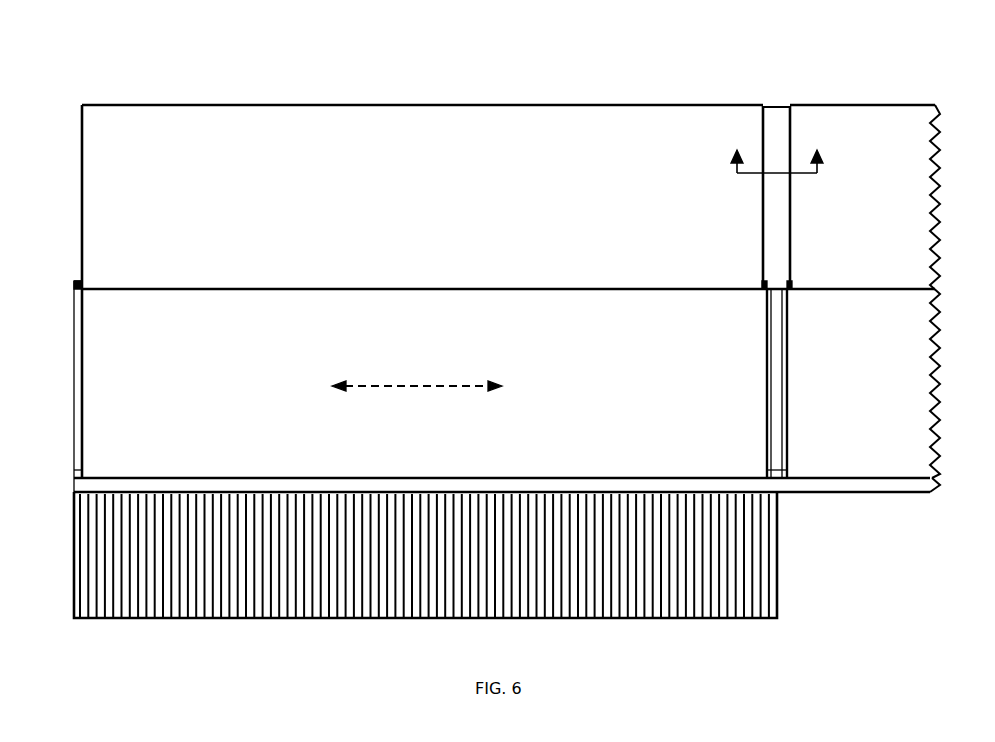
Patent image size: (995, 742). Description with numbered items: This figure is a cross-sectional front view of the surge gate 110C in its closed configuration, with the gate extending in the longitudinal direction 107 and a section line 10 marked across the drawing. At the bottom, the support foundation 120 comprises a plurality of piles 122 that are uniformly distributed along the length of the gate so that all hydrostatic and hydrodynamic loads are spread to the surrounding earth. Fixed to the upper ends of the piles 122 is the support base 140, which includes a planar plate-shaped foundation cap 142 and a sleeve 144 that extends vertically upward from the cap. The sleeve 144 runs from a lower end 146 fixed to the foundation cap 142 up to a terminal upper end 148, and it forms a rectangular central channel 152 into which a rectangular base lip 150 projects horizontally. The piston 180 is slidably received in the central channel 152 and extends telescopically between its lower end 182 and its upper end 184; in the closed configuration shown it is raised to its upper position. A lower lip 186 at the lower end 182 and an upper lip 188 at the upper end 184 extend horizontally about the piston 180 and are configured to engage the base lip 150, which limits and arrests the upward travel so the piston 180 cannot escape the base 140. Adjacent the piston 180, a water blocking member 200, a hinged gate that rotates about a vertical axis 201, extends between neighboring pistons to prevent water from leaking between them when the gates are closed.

The surge gate 110C is at (122, 92).
The upper lip 188 is at (92, 104).
The piston 180 is at (240, 140).
The upper end 184 is at (331, 104).
The water blocking member 200 is at (778, 104).
The section line 10 is at (777, 154).
The vertical axis 201 is at (792, 195).
The lower end 182 is at (208, 287).
The central channel 152 is at (274, 310).
The upper end 148 is at (74, 283).
The lower lip 186 is at (90, 288).
The base lip 150 is at (72, 290).
The longitudinal direction 107 is at (389, 384).
The sleeve 144 is at (79, 410).
The support base 140 is at (106, 487).
The foundation cap 142 is at (94, 494).
The lower end 146 is at (767, 476).
The support foundation 120 is at (765, 556).
The piles 122 is at (768, 590).